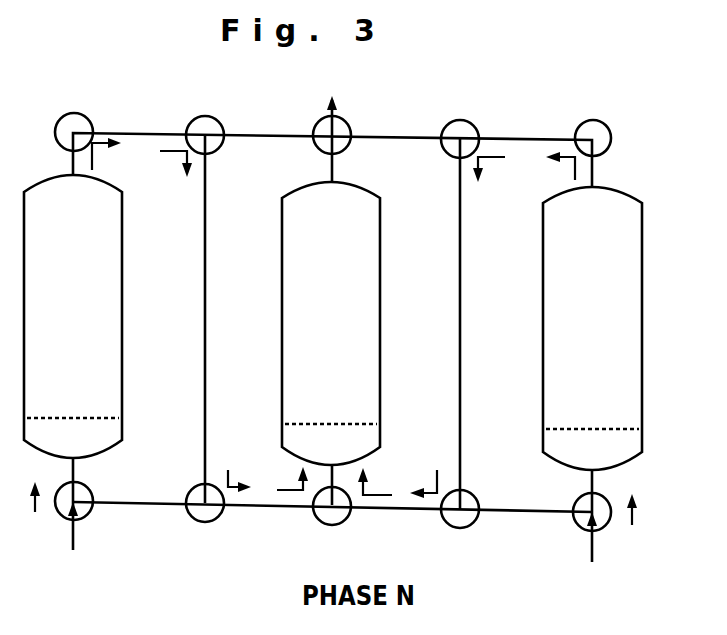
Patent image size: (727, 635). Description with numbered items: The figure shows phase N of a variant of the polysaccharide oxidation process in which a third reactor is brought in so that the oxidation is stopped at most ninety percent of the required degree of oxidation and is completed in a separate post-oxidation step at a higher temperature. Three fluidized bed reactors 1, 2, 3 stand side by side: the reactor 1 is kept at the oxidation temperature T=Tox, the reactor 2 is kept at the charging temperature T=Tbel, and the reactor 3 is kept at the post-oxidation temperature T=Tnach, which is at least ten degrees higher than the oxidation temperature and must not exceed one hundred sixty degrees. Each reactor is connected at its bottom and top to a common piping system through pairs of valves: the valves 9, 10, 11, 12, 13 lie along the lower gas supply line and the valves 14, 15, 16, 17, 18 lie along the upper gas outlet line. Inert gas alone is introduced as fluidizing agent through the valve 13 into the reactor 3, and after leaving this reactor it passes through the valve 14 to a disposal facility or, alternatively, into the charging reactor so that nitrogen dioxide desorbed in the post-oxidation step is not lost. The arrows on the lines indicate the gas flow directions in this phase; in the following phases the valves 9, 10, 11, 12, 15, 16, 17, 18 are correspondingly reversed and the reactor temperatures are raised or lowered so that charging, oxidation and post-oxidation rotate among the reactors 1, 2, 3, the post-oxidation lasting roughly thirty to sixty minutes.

The fluidized bed reactor 1 is at (73, 316).
The fluidized bed reactor 2 is at (331, 323).
The fluidized bed reactor 3 is at (592, 328).
The valve 9 is at (72, 520).
The valve 10 is at (198, 520).
The valve 11 is at (329, 522).
The valve 12 is at (454, 525).
The valve 13 is at (585, 527).
The valve 14 is at (610, 128).
The valve 15 is at (478, 128).
The valve 16 is at (349, 125).
The valve 17 is at (218, 125).
The valve 18 is at (91, 122).